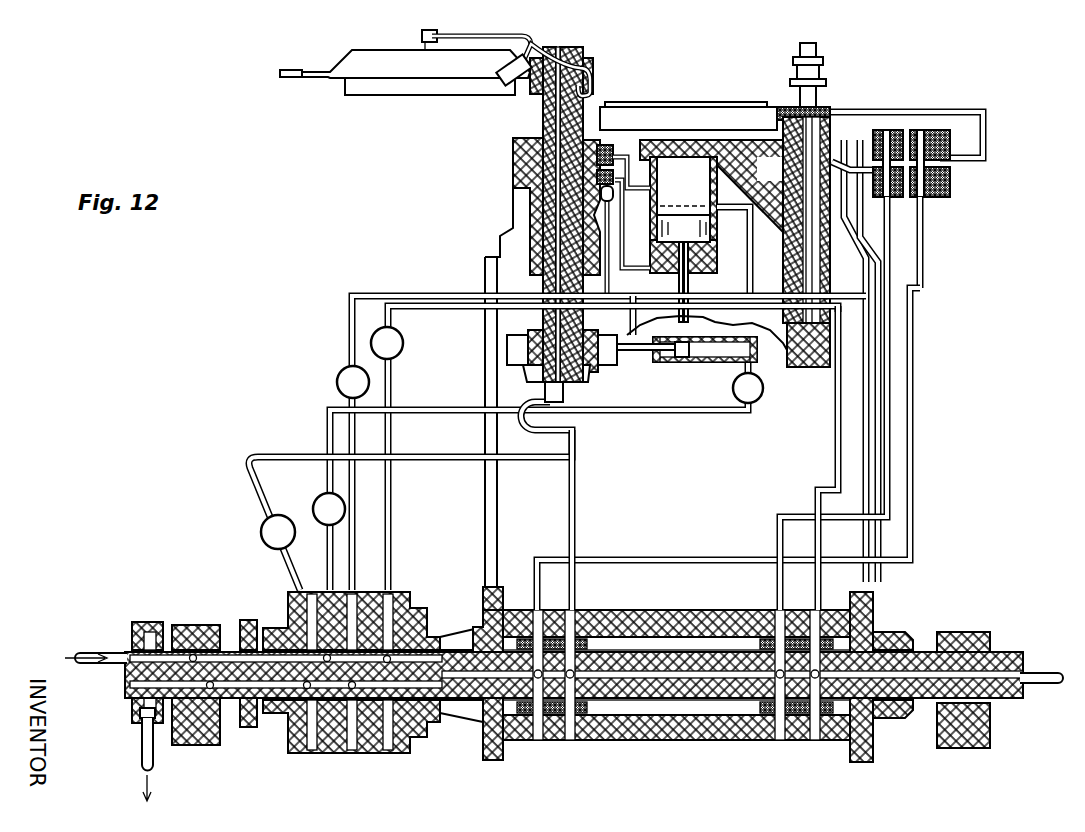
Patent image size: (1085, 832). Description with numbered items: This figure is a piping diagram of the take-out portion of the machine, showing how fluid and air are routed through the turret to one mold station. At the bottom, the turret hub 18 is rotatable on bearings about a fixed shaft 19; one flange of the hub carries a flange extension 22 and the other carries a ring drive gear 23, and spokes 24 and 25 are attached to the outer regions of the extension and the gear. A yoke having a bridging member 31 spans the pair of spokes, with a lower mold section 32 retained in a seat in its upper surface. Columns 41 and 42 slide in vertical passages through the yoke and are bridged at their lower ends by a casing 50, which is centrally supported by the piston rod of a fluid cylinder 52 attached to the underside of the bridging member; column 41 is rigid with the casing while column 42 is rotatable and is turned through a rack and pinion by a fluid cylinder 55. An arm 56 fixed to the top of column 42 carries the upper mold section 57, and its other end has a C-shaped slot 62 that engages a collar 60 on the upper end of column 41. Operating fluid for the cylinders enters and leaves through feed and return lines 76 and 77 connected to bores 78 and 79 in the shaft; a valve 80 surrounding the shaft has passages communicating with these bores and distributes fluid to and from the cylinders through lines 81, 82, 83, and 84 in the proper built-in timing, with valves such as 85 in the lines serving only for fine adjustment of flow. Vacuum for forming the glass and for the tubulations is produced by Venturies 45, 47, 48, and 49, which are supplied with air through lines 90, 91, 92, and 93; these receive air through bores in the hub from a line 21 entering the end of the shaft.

The hub 18 is at (642, 613).
The fixed shaft 19 is at (125, 690).
The line 21 is at (1035, 675).
The flange extension 22 is at (498, 507).
The ring drive gear 23 is at (877, 418).
The spoke 24 is at (500, 233).
The spoke 25 is at (853, 249).
The bridging member 31 is at (757, 190).
The lower mold section 32 is at (698, 107).
The column 41 is at (805, 226).
The column 42 is at (545, 160).
The Venturi 45 is at (874, 190).
The Venturi 47 is at (945, 183).
The Venturi 48 is at (513, 82).
The Venturi 49 is at (623, 220).
The casing 50 is at (603, 380).
The fluid cylinder 52 is at (712, 186).
The fluid cylinder 55 is at (722, 366).
The arm 56 is at (383, 54).
The upper mold section 57 is at (418, 97).
The collar 60 is at (825, 62).
The C-shaped slot 62 is at (298, 80).
The fluid feed line 76 is at (100, 653).
The fluid return line 77 is at (140, 744).
The bore 78 is at (193, 654).
The bore 79 is at (210, 690).
The valve 80 is at (286, 712).
The line 81 is at (394, 509).
The line 82 is at (348, 306).
The line 83 is at (727, 413).
The line 84 is at (248, 486).
The valve 85 is at (261, 532).
The line 90 is at (786, 516).
The line 91 is at (928, 250).
The line 92 is at (578, 489).
The line 93 is at (835, 434).